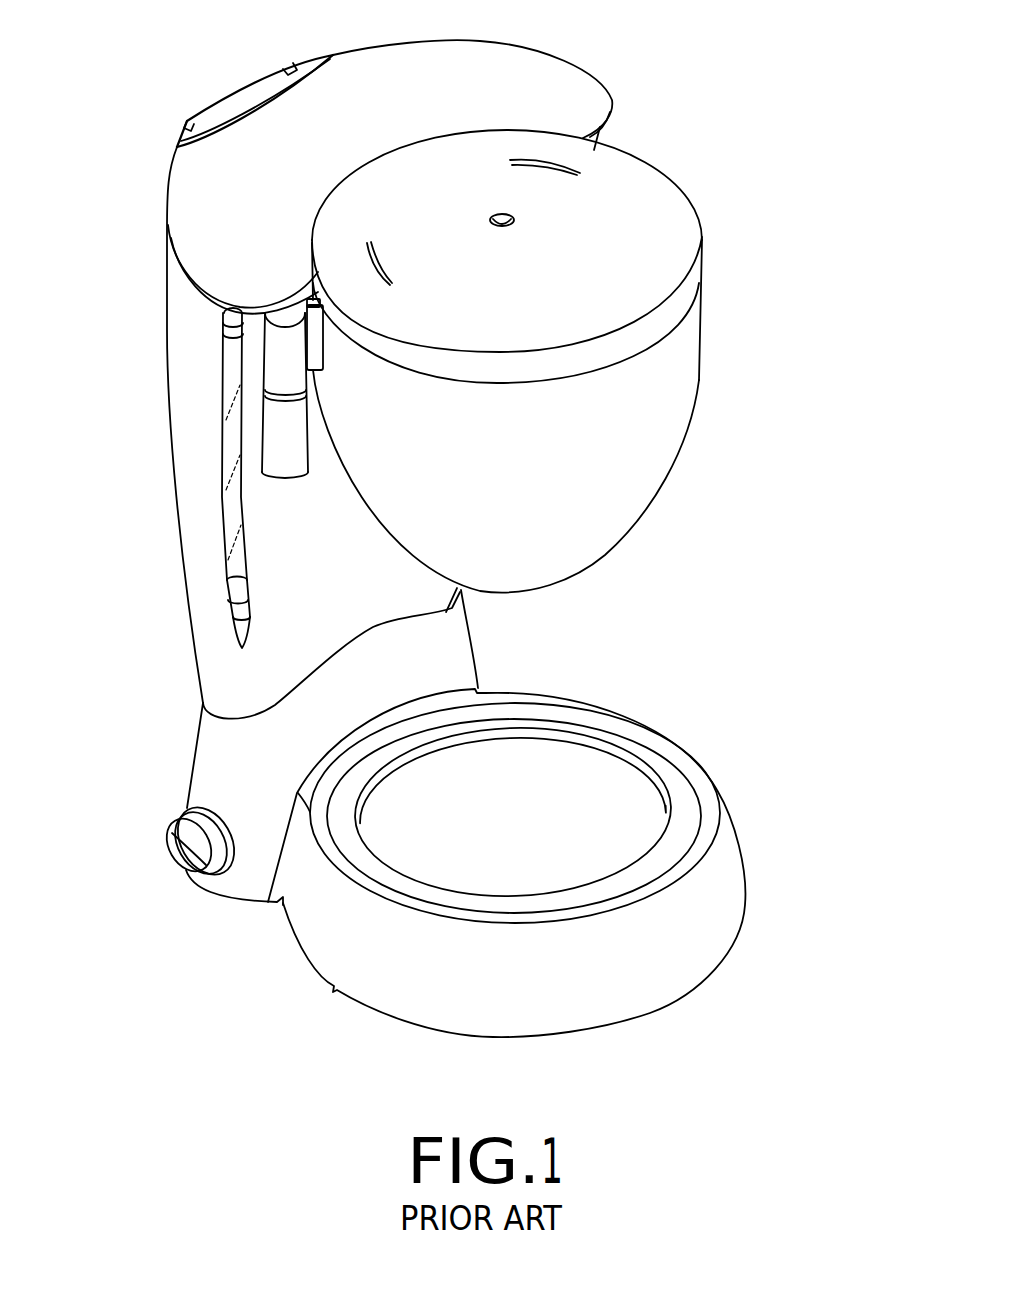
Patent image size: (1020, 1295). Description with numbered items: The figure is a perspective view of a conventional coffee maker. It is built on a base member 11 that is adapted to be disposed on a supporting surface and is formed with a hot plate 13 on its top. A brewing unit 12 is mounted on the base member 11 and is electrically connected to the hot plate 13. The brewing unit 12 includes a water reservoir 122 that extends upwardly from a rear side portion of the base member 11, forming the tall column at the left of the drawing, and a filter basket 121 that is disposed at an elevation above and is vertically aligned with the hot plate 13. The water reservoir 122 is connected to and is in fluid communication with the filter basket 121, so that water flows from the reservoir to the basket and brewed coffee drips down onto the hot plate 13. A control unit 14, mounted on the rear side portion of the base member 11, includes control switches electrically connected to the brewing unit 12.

The base member 11 is at (327, 937).
The brewing unit 12 is at (177, 552).
The filter basket 121 is at (645, 410).
The water reservoir 122 is at (187, 418).
The hot plate 13 is at (583, 777).
The control unit 14 is at (167, 830).